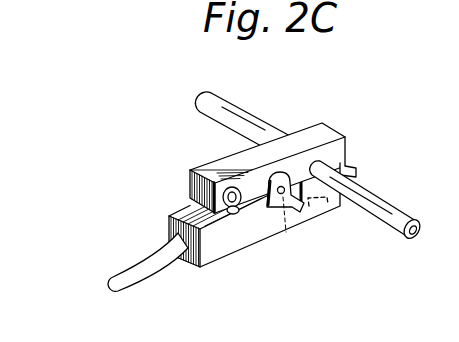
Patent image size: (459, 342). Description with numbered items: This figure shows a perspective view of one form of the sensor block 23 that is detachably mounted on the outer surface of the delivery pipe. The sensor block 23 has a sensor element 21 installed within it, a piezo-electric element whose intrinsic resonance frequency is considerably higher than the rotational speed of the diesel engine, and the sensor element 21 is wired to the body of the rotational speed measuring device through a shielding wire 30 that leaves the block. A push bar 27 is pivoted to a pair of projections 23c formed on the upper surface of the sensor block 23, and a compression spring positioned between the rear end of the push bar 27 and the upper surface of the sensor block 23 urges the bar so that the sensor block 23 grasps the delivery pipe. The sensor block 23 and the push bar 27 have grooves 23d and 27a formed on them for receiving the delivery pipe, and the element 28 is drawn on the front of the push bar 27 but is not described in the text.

The sensor element 21 is at (326, 207).
The sensor block 23 is at (168, 233).
The projections 23c is at (282, 213).
The groove 23d is at (298, 215).
The push bar 27 is at (222, 166).
The groove 27a is at (318, 164).
The fastening screw 28 is at (206, 209).
The shielding wire 30 is at (147, 274).